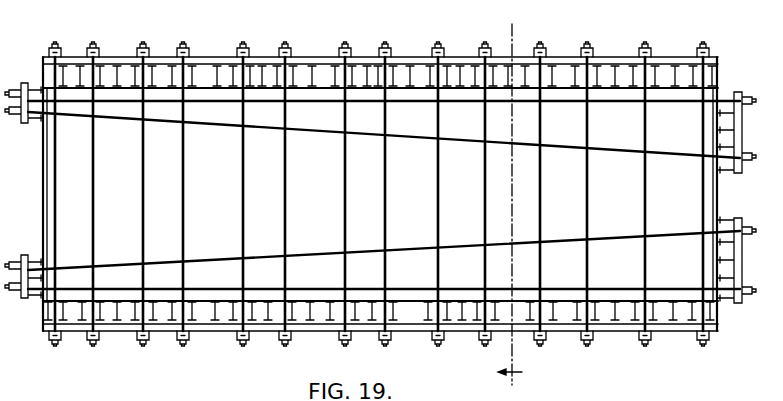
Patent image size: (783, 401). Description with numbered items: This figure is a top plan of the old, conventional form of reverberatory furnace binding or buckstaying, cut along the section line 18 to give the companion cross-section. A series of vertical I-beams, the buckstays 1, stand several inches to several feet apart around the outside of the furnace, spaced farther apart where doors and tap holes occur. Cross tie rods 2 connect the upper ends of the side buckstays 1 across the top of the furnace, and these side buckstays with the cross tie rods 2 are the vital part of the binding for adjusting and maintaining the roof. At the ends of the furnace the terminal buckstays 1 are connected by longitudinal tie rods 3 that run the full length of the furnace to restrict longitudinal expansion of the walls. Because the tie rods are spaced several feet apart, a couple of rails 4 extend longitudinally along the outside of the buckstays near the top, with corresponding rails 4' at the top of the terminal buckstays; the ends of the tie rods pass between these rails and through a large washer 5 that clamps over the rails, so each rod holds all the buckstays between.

The buckstays 1 is at (237, 78).
The tie rods 2 is at (95, 192).
The longitudinal tie rods 3 is at (472, 101).
The rails 4 is at (380, 194).
The rails 4' is at (387, 193).
The washer 5 is at (172, 57).
The section line 18— 18 is at (514, 202).